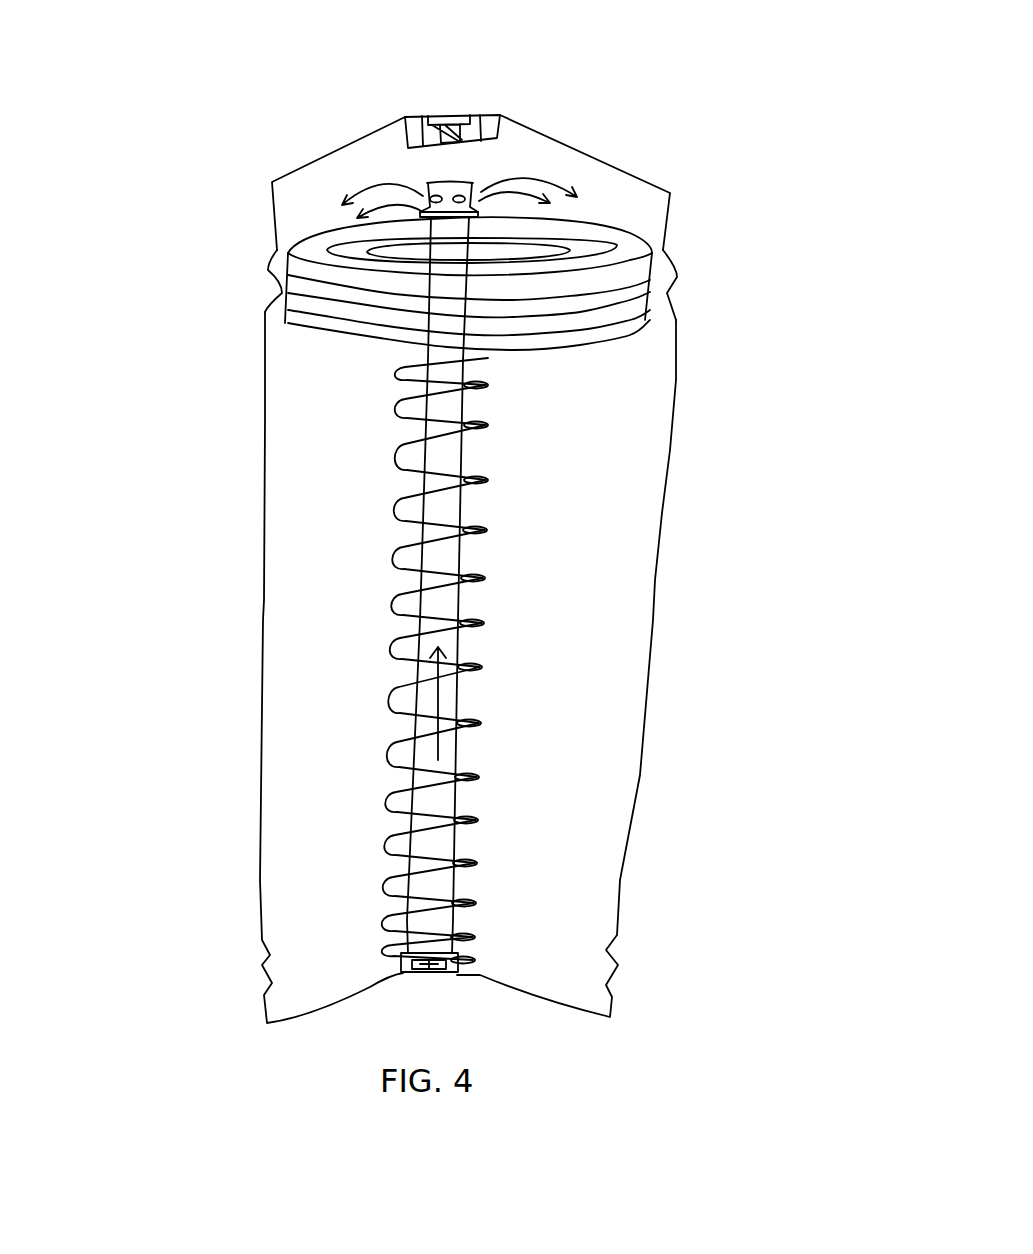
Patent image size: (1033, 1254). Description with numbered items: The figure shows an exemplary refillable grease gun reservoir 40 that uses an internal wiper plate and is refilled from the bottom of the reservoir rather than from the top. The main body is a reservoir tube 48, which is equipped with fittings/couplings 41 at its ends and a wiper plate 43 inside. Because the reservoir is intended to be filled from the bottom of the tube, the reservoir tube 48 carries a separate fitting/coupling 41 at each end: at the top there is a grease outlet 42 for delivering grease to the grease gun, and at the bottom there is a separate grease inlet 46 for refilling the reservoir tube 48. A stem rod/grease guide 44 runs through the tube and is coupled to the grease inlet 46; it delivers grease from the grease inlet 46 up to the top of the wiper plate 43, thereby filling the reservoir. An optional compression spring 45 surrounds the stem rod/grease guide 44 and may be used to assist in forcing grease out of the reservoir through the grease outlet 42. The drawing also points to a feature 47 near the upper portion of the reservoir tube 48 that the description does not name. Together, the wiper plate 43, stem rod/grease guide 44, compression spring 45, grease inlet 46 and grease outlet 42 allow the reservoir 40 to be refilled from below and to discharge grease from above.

The refillable grease gun reservoir 40 is at (453, 552).
The fitting/coupling 41 is at (402, 99).
The grease outlet 42 is at (456, 93).
The wiper plate 43 is at (624, 248).
The stem rod/grease guide 44 is at (454, 552).
The compression spring 45 is at (486, 811).
The grease inlet 46 is at (427, 973).
The crimp seam 47 is at (257, 273).
The reservoir tube 48 is at (254, 596).